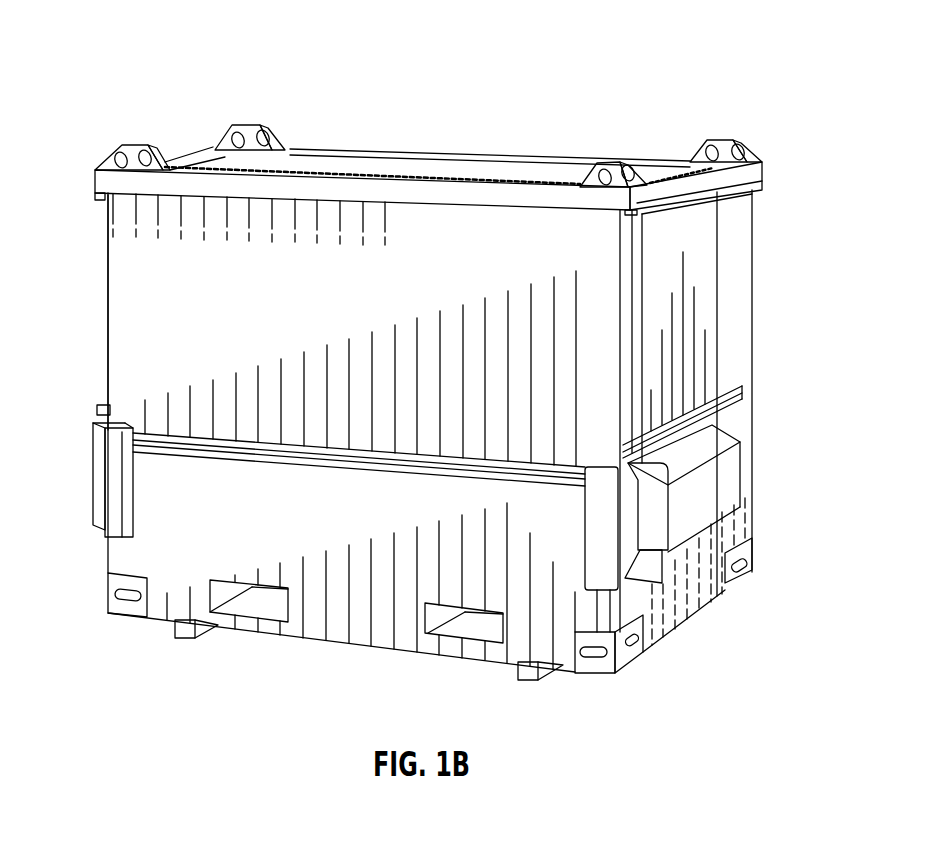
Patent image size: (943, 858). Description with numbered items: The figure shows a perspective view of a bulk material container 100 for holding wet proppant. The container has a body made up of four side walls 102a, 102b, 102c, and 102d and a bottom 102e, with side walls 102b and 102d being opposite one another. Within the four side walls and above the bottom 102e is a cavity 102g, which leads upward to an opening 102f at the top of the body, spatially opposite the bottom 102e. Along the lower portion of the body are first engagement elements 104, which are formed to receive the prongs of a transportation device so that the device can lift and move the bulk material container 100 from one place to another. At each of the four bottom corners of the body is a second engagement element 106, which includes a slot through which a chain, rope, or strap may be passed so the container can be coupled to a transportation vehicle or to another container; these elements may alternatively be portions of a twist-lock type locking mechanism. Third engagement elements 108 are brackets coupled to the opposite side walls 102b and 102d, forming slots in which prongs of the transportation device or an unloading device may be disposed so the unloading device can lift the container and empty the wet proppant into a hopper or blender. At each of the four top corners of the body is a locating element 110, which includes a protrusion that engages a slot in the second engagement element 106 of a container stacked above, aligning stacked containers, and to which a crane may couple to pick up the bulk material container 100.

The bulk material container 100 is at (138, 45).
The side wall 102a is at (232, 287).
The side wall 102b is at (735, 322).
The side wall 102c is at (752, 248).
The side wall 102d is at (108, 268).
The bottom 102e is at (327, 648).
The opening 102f is at (350, 176).
The cavity 102g is at (453, 174).
The first engagement element 104 is at (252, 607).
The second engagement element 106 is at (120, 612).
The third engagement element 108 is at (97, 468).
The locating element 110 is at (122, 148).